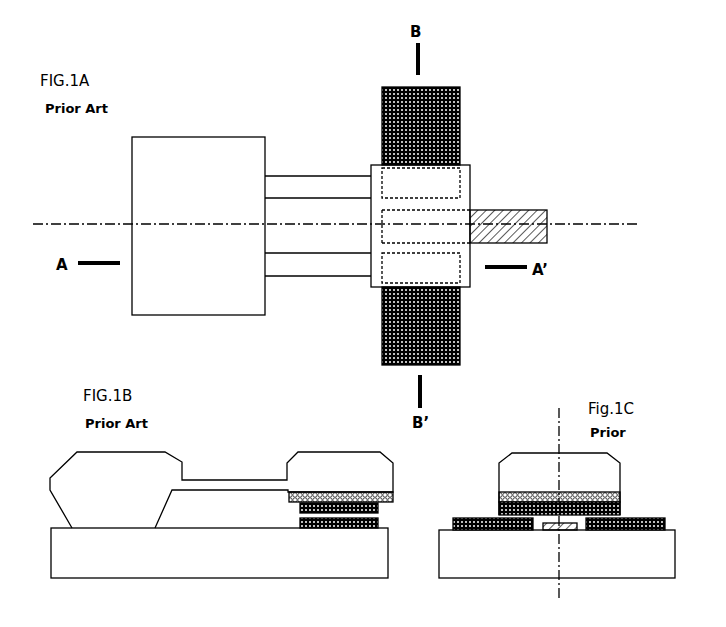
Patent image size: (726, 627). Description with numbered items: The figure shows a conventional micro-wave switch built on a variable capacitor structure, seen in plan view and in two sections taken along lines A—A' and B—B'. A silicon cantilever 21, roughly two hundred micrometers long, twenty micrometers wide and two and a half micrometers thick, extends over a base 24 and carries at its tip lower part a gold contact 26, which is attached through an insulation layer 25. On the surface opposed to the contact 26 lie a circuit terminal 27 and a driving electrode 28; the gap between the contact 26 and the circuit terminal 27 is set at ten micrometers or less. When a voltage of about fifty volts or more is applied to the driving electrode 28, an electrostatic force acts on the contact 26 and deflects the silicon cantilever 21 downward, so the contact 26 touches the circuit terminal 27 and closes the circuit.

In FIG. 1A, the silicon cantilever 21 is at (313, 187).
In FIG. 1B, the silicon cantilever 21 is at (218, 480).
In FIG. 1B, the substrate 24 is at (112, 560).
In FIG. 1B, the insulation layer 25 is at (395, 497).
In FIG. 1B, the gold contact 26 is at (378, 508).
In FIG. 1C, the gold contact 26 is at (620, 508).
In FIG. 1B, the circuit terminal 27 is at (378, 525).
In FIG. 1C, the circuit terminal 27 is at (528, 530).
In FIG. 1A, the driving electrode 28 is at (528, 208).
In FIG. 1C, the driving electrode 28 is at (548, 530).